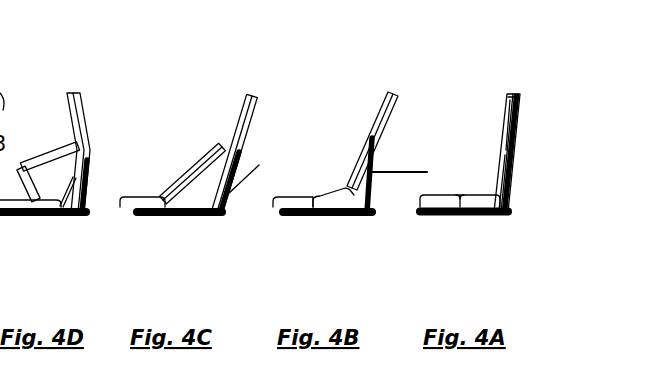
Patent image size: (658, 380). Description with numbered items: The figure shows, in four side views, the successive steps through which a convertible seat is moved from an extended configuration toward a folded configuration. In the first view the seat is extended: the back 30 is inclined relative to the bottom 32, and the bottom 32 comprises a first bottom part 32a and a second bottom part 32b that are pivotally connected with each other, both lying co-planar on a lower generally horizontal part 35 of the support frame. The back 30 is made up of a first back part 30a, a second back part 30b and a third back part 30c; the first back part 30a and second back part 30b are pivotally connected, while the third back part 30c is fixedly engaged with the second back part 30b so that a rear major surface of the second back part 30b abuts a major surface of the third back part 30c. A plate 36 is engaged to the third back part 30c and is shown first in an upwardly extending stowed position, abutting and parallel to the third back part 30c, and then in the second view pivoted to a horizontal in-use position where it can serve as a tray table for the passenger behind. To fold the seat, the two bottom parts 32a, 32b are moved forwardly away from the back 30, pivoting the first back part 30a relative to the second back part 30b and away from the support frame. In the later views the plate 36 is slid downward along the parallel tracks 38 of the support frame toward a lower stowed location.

In FIG. 4A, the back 30 is at (513, 93).
In FIG. 4A, the first back part 30a is at (497, 164).
In FIG. 4B, the first back part 30a is at (353, 165).
In FIG. 4A, the second back part 30b is at (503, 117).
In FIG. 4B, the second back part 30b is at (377, 127).
In FIG. 4A, the third back part 30c is at (521, 110).
In FIG. 4C, the third back part 30c is at (258, 108).
In FIG. 4A, the bottom 32 is at (450, 216).
In FIG. 4A, the first bottom part 32a is at (428, 216).
In FIG. 4B, the first bottom part 32a is at (280, 214).
In FIG. 4A, the second bottom part 32b is at (480, 216).
In FIG. 4B, the second bottom part 32b is at (327, 213).
In FIG. 4A, the lower generally horizontal part 35 is at (418, 216).
In FIG. 4A, the plate 36 is at (516, 143).
In FIG. 4B, the plate 36 is at (412, 171).
In FIG. 4C, the plate 36 is at (238, 194).
In FIG. 4D, the plate 36 is at (67, 220).
In FIG. 4C, the tracks 38 is at (207, 217).